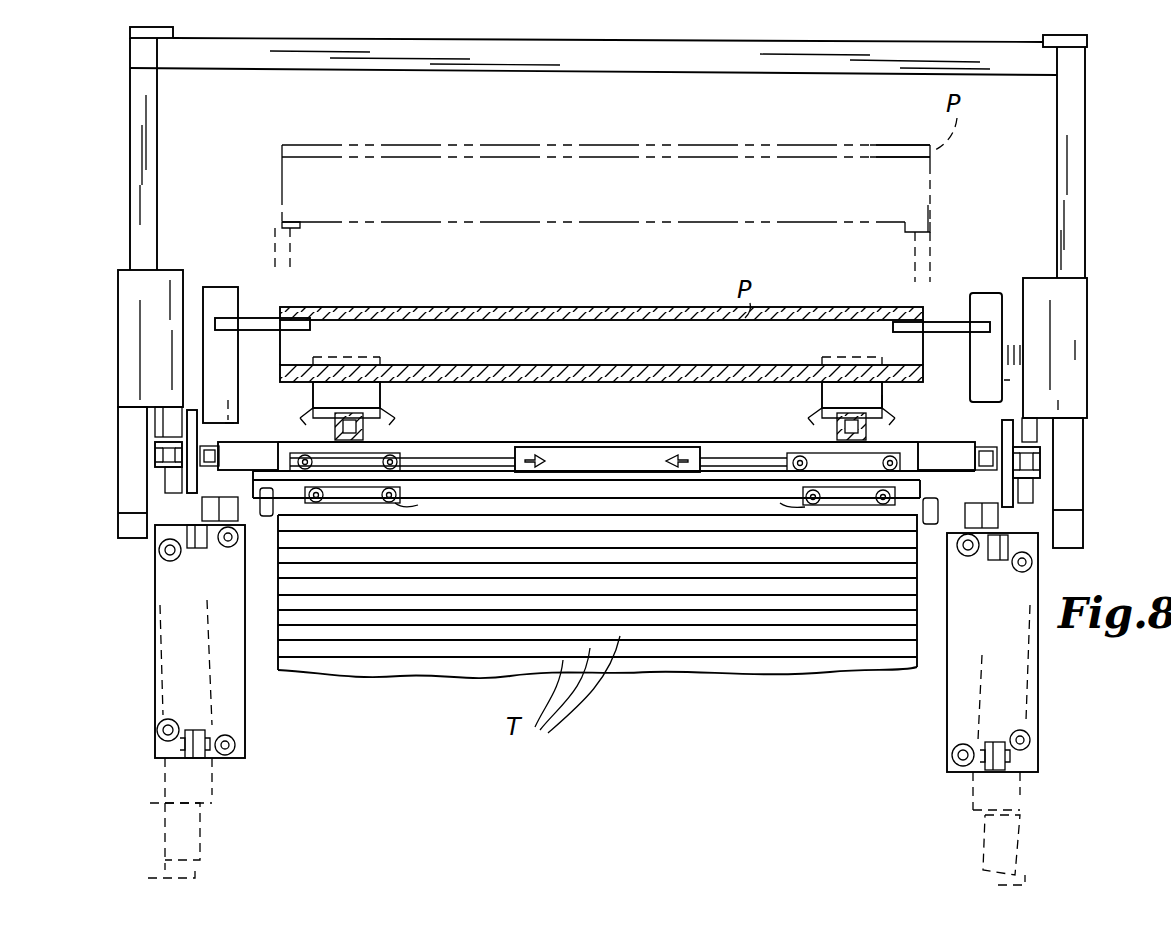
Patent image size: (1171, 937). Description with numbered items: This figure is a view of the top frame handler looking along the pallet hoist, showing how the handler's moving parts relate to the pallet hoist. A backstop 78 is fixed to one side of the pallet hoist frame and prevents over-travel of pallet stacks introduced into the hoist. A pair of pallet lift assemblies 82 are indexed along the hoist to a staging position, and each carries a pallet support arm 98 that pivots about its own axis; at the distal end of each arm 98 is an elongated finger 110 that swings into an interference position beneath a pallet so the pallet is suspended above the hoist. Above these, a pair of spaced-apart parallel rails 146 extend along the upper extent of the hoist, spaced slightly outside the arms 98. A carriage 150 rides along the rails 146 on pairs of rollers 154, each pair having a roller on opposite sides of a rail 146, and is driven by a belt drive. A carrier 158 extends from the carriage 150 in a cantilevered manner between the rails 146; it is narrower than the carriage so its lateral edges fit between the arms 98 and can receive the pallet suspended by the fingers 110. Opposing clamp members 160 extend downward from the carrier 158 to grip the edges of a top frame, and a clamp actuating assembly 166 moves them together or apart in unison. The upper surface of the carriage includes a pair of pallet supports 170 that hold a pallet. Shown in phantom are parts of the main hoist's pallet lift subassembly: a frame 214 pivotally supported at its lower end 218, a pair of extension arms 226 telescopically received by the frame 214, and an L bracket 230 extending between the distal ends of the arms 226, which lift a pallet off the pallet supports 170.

The backstop 78 is at (220, 287).
The pallet lift assembly 82 is at (155, 708).
The pallet support arm 98 is at (986, 293).
The finger 110 is at (245, 318).
The rail 146 is at (155, 455).
The carriage 150 is at (225, 450).
The roller 154 is at (1035, 495).
The carrier 158 is at (928, 450).
The clamp member 160 is at (268, 520).
The clamp actuating assembly 166 is at (607, 452).
The pallet support 170 is at (395, 420).
The frame 214 is at (205, 785).
The lower end 218 is at (200, 866).
The extension arm 226 is at (932, 240).
The L bracket 230 is at (935, 215).